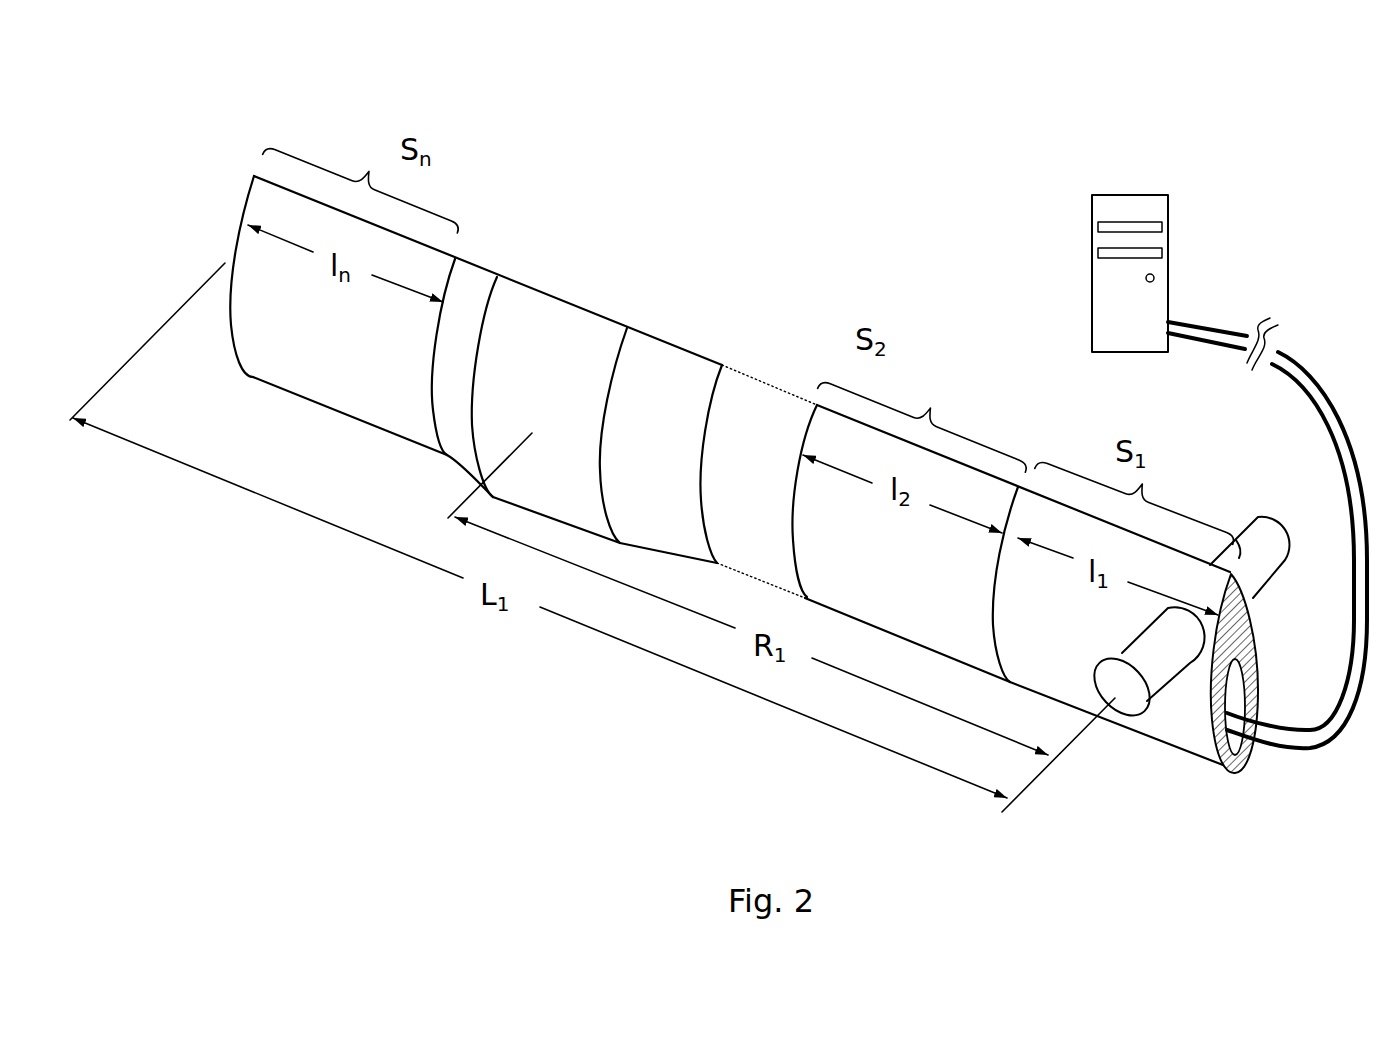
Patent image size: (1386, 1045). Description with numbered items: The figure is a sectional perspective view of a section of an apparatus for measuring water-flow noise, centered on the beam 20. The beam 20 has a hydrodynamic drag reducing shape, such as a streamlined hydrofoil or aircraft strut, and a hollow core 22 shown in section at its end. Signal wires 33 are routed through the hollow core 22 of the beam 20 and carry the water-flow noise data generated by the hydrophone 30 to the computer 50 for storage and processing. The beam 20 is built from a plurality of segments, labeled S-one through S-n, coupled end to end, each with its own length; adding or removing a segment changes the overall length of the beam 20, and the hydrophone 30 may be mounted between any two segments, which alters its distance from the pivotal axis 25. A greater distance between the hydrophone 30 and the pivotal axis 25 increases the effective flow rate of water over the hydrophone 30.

The beam 20 is at (225, 178).
The hydrophone 30 is at (604, 390).
The hollow core 22 is at (1237, 697).
The pivotal axis 25 is at (1163, 667).
The signal wires 33 is at (1300, 363).
The computer 50 is at (1090, 301).